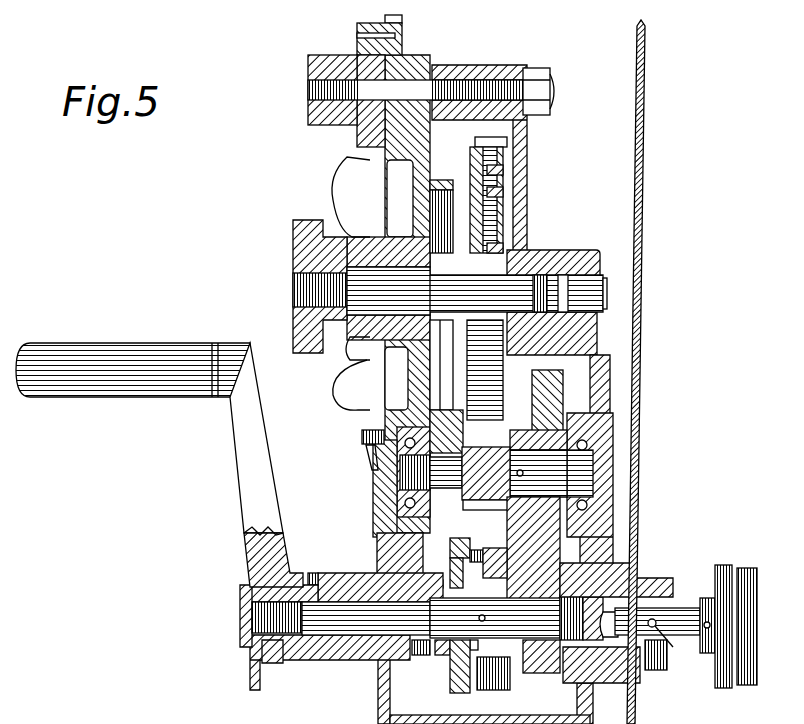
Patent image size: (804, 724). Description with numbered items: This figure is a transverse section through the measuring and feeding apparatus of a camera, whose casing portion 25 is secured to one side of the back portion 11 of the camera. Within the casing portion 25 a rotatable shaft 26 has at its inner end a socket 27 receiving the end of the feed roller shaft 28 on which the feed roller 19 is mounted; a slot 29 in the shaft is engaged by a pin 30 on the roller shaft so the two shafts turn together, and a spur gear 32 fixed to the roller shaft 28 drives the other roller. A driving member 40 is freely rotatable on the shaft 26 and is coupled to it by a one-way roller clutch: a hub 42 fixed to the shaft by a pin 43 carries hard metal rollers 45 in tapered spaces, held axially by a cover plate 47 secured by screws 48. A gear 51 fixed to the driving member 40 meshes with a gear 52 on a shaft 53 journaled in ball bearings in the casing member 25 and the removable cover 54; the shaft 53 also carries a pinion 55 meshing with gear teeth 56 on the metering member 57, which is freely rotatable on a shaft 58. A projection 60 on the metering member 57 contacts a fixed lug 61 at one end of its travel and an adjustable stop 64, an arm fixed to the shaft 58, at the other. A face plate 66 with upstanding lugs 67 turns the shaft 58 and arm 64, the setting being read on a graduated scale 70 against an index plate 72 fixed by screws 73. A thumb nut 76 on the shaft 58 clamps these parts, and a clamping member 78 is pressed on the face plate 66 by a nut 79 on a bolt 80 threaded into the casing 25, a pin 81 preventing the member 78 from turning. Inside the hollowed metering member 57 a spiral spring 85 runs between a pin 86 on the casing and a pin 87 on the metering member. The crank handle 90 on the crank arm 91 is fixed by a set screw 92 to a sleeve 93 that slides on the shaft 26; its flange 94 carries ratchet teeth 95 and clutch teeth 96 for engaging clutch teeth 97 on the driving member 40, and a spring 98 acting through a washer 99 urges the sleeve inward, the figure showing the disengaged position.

The back portion of the camera 11 is at (645, 146).
The feed roller 19 is at (746, 686).
The casing portion 25 is at (600, 367).
The rotatable shaft 26 is at (363, 620).
The socket 27 is at (617, 617).
The feed roller shaft 28 is at (682, 608).
The slot 29 is at (690, 645).
The pin 30 is at (660, 670).
The spur gear 32 is at (723, 566).
The driving member 40 is at (512, 690).
The hub 42 is at (442, 656).
The pin 43 is at (485, 617).
The hard metal roller 45 is at (492, 690).
The cover plate 47 is at (462, 678).
The screws 48 is at (452, 566).
The gear 51 is at (552, 673).
The gear 52 is at (530, 515).
The shaft 53 is at (440, 457).
The casing cover 54 is at (384, 547).
The pinion 55 is at (480, 502).
The gear teeth 56 is at (483, 143).
The metering member 57 is at (480, 170).
The shaft 58 is at (535, 292).
The projection 60 is at (442, 215).
The fixed lug 61 is at (440, 184).
The adjustable stop 64 is at (444, 345).
The face plate 66 is at (347, 370).
The upstanding lugs 67 is at (345, 176).
The graduated scale 70 is at (376, 503).
The plate 72 is at (366, 455).
The screws 73 is at (360, 440).
The thumb nut 76 is at (297, 243).
The clamping member 78 is at (367, 52).
The nut 79 is at (315, 110).
The bolt 80 is at (412, 92).
The pin 81 is at (404, 32).
The spiral spring 85 is at (510, 200).
The pin 86 is at (507, 172).
The pin 87 is at (505, 248).
The crank handle 90 is at (80, 398).
The crank arm 91 is at (247, 490).
The set screw 92 is at (272, 664).
The sleeve 93 is at (311, 573).
The flange 94 is at (438, 582).
The ratchet teeth 95 is at (456, 538).
The clutch teeth 96 is at (476, 550).
The clutch teeth 97 is at (495, 550).
The spring 98 is at (415, 656).
The washer 99 is at (470, 648).